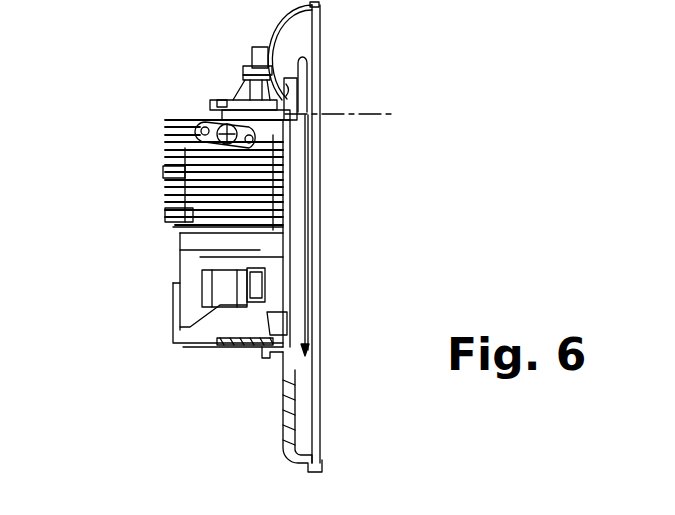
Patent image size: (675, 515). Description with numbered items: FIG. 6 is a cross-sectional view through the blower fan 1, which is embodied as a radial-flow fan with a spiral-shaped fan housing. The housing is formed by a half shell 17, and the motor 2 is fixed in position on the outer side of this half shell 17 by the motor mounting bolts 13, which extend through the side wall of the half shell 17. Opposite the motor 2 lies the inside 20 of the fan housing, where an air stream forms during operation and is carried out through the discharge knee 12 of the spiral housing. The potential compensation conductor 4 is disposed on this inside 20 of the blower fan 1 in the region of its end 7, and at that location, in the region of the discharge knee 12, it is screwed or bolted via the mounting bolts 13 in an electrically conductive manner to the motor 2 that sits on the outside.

The blower fan 1 is at (211, 366).
The motor 2 is at (160, 172).
The potential compensation conductor 4 is at (313, 223).
The end 7 is at (312, 90).
The discharge knee 12 is at (292, 37).
The motor mounting bolts 13 is at (360, 116).
The half shell 17 is at (276, 34).
The inside 20 is at (372, 429).